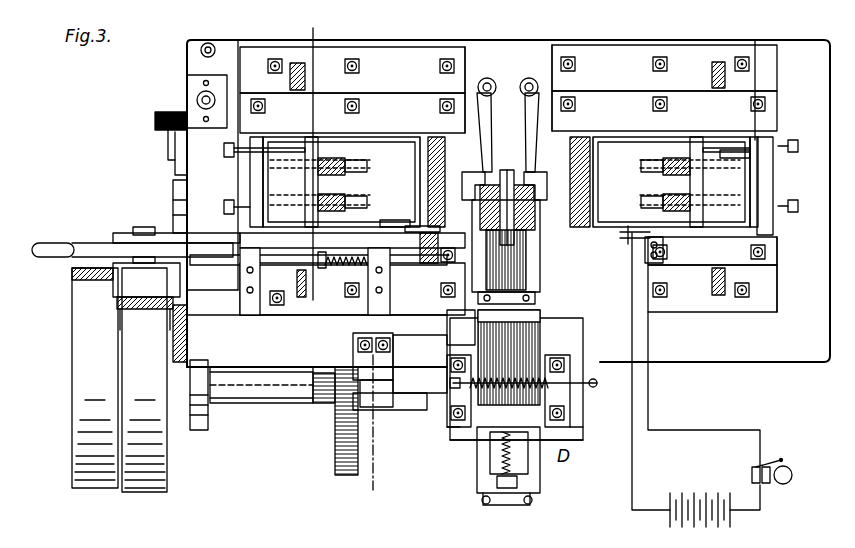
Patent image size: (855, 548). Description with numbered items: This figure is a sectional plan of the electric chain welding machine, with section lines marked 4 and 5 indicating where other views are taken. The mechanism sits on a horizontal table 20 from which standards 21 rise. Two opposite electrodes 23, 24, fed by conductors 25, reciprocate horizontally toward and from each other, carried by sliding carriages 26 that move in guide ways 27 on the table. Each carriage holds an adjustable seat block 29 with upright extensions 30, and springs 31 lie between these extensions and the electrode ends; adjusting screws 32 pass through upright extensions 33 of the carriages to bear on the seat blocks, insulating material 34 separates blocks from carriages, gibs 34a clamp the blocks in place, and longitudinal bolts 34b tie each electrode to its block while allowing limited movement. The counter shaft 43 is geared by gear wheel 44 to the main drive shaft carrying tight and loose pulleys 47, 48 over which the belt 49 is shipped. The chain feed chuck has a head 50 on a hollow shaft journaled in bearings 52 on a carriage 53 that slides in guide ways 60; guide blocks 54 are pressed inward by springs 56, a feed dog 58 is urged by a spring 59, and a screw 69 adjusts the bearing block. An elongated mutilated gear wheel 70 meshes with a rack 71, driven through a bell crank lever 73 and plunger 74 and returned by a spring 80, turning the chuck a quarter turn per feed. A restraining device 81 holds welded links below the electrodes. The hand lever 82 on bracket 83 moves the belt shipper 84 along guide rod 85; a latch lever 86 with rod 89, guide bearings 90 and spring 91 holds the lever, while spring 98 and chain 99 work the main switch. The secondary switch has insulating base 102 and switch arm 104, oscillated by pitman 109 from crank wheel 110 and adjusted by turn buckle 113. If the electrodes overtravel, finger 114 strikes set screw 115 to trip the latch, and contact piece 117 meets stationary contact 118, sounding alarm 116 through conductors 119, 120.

The shaft axis 4 is at (340, 265).
The shaft 5 is at (598, 385).
The table 20 is at (512, 46).
The standards 21 is at (306, 72).
The electrode 23 is at (378, 160).
The electrode 24 is at (608, 157).
The conductors 25 is at (428, 186).
The sliding carriages 26 is at (232, 141).
The guide ways 27 is at (508, 180).
The seat blocks 29 is at (311, 160).
The upright extensions 30 is at (508, 182).
The springs 31 is at (325, 175).
The adjusting screws 32 is at (230, 152).
The upright extensions 33 is at (258, 150).
The insulating material 34 is at (300, 150).
The gibs 34a is at (412, 93).
The longitudinal bolts 34b is at (732, 131).
The counter shaft 43 is at (312, 400).
The gear wheel 44 is at (338, 440).
The tight pulley 47 is at (95, 378).
The loose pulley 48 is at (144, 380).
The belt 49 is at (145, 312).
The chuck head 50 is at (522, 312).
The bearings 52 is at (490, 413).
The carriage 53 is at (477, 486).
The guide block 54 is at (532, 202).
The springs 56 is at (540, 258).
The feed dog 58 is at (475, 202).
The spring 59 is at (470, 312).
The guide ways 60 is at (448, 436).
The screw 69 is at (504, 466).
The mutilated gear wheel 70 is at (515, 357).
The rack 71 is at (420, 380).
The bell crank lever 73 is at (385, 411).
The plunger 74 is at (366, 376).
The spring 80 is at (580, 398).
The restraining device 81 is at (533, 126).
The hand lever 82 is at (38, 256).
The bracket 83 is at (130, 240).
The belt shipper 84 is at (123, 292).
The guide rod 85 is at (72, 280).
The latch lever 86 is at (92, 245).
The rod 89 is at (228, 265).
The guide bearings 90 is at (250, 268).
The spring 91 is at (336, 274).
The spring 98 is at (212, 45).
The chain 99 is at (200, 97).
The insulating base 102 is at (156, 122).
The switch arm 104 is at (178, 162).
The pitman 109 is at (178, 220).
The crank wheel 110 is at (203, 422).
The turn buckle 113 is at (182, 322).
The finger 114 is at (392, 216).
The set screw 115 is at (430, 265).
The electric alarm 116 is at (785, 465).
The contact piece 117 is at (664, 243).
The stationary contact piece 118 is at (630, 232).
The conductor 119 is at (633, 488).
The conductor 120 is at (650, 386).